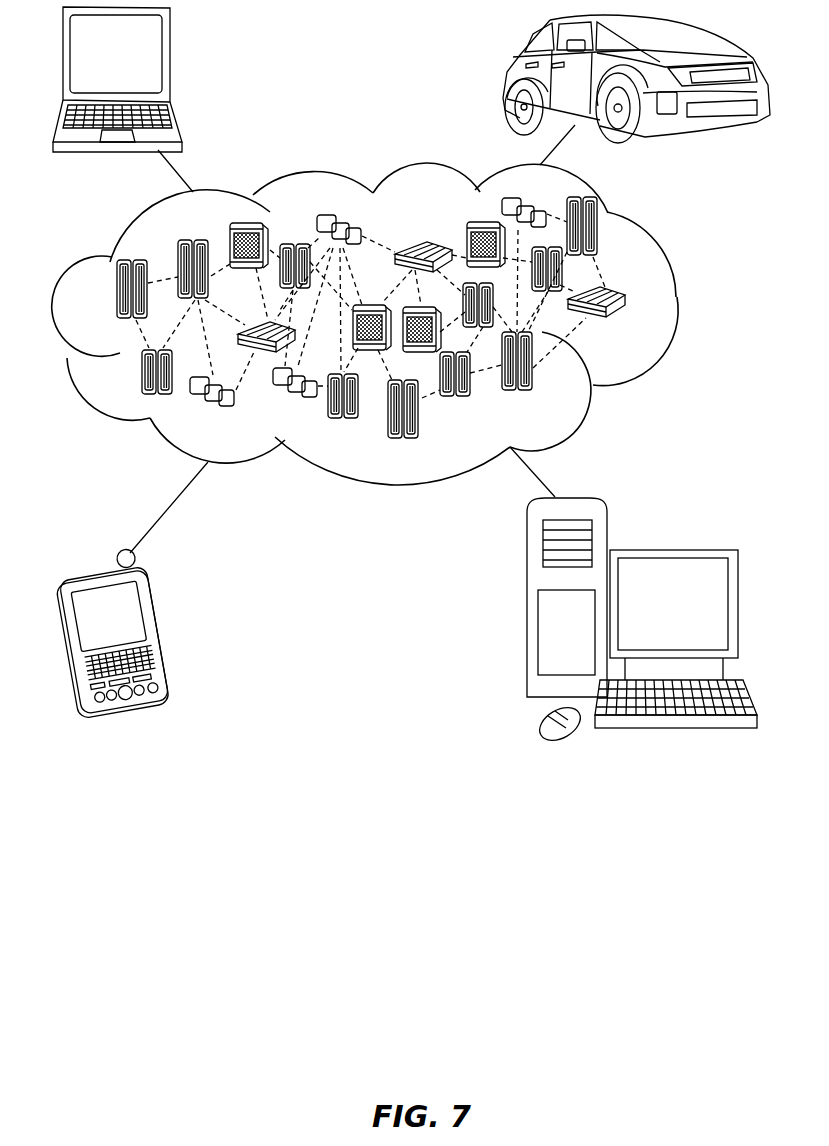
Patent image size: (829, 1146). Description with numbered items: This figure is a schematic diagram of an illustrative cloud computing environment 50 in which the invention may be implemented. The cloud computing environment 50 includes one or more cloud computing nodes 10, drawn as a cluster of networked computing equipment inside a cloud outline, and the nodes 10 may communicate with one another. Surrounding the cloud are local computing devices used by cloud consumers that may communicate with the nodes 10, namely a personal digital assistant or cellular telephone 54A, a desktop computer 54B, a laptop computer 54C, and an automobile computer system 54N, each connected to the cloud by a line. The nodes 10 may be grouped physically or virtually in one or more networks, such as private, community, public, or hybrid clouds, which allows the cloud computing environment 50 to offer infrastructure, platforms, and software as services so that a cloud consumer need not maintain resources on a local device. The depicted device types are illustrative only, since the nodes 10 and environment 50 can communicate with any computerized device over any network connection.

The cloud computing environment 50 is at (676, 298).
The cloud computing node 10 is at (642, 334).
The personal digital assistant or cellular telephone 54A is at (157, 626).
The desktop computer 54B is at (672, 548).
The laptop computer 54C is at (170, 63).
The automobile computer system 54N is at (506, 79).